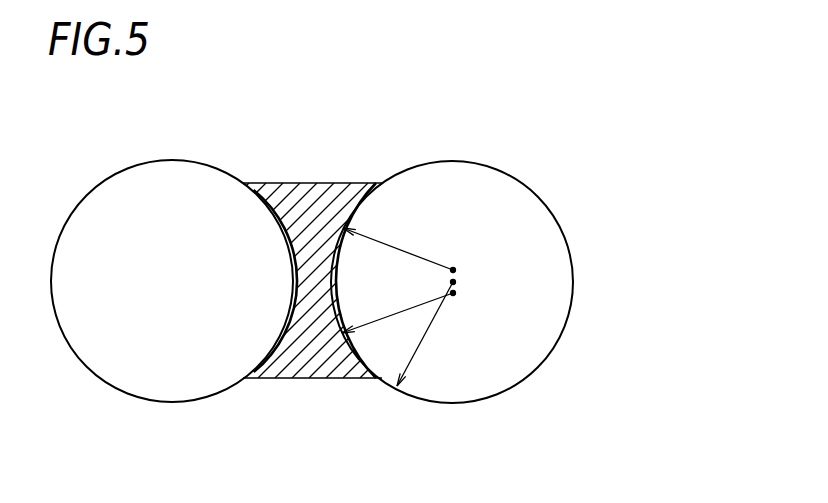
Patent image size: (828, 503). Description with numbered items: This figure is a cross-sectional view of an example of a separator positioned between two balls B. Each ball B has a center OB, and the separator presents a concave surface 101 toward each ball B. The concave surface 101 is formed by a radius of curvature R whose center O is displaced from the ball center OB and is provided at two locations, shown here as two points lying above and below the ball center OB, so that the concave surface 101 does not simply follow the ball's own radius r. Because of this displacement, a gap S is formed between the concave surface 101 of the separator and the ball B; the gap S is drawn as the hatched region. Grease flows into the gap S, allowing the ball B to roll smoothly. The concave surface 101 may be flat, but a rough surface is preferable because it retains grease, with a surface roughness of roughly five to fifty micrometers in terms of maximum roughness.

The concave surface 101 is at (260, 204).
The ball B is at (175, 382).
The gap S is at (299, 265).
The radius of curvature R is at (397, 279).
The ball radius r is at (425, 334).
The center of the radius of curvature O is at (457, 268).
The center of the ball OB is at (460, 281).